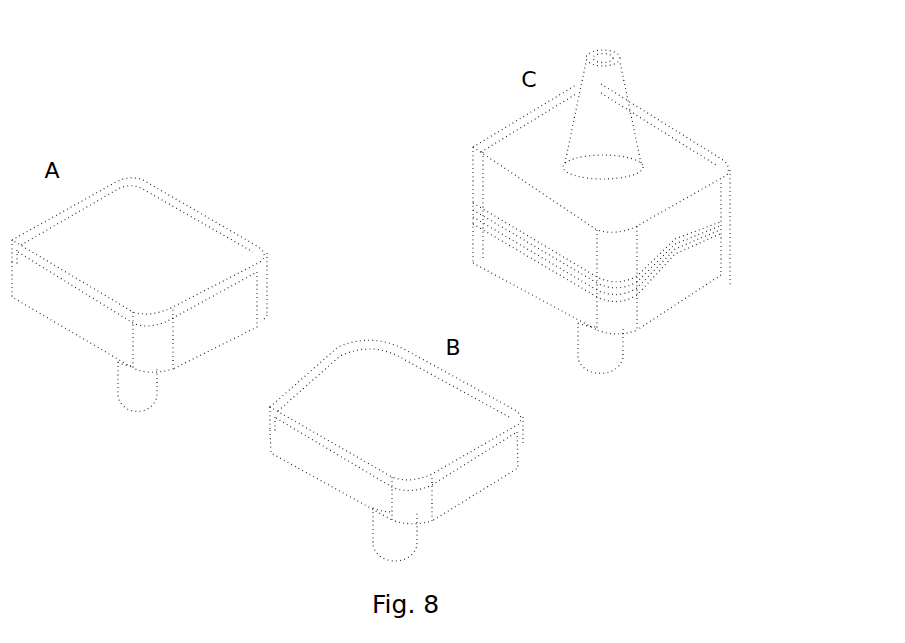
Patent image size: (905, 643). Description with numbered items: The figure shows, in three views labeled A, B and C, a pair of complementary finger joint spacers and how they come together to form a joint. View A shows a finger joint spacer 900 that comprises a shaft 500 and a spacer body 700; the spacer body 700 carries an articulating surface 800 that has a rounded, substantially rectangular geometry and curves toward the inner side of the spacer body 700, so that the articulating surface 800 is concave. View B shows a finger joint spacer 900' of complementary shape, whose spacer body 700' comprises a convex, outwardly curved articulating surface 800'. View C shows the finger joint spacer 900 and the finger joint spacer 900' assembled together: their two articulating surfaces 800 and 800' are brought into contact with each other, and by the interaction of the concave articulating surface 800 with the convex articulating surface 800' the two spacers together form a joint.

The finger joint spacer 900 is at (422, 255).
The finger joint spacer 900' is at (533, 370).
The articulating surface 800 is at (422, 188).
The articulating surface 800' is at (533, 383).
The spacer body 700 is at (139, 337).
The spacer body 700' is at (430, 505).
The shaft 500 is at (133, 384).